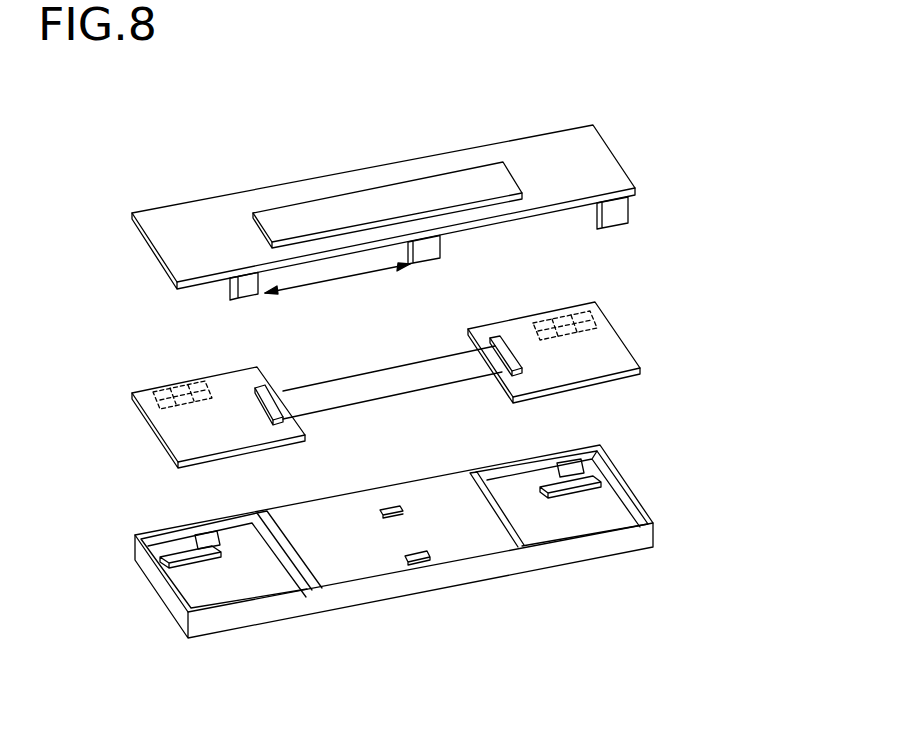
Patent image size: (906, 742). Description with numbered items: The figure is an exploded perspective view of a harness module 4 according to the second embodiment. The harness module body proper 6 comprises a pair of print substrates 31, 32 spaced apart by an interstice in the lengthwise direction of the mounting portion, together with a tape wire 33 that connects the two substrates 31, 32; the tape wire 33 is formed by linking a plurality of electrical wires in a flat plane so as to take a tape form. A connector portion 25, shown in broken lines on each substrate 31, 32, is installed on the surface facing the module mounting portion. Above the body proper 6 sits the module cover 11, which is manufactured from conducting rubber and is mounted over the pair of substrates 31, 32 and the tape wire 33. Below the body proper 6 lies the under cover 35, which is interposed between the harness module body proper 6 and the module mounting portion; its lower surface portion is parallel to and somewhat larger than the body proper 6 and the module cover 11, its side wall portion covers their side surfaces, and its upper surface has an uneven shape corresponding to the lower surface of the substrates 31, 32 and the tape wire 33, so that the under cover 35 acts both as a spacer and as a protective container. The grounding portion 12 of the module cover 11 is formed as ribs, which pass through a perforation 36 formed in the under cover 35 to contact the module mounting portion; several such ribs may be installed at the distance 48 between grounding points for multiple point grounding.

The harness module 4 is at (682, 212).
The harness module body proper 6 is at (684, 306).
The module cover 11 is at (510, 147).
The grounding portion 12 is at (243, 283).
The connector portion 25 is at (168, 412).
The substrate 31 is at (162, 384).
The substrate 32 is at (597, 315).
The tape wire 33 is at (350, 380).
The under cover 35 is at (135, 547).
The perforation 36 is at (422, 558).
The distance between grounding 48 is at (322, 282).